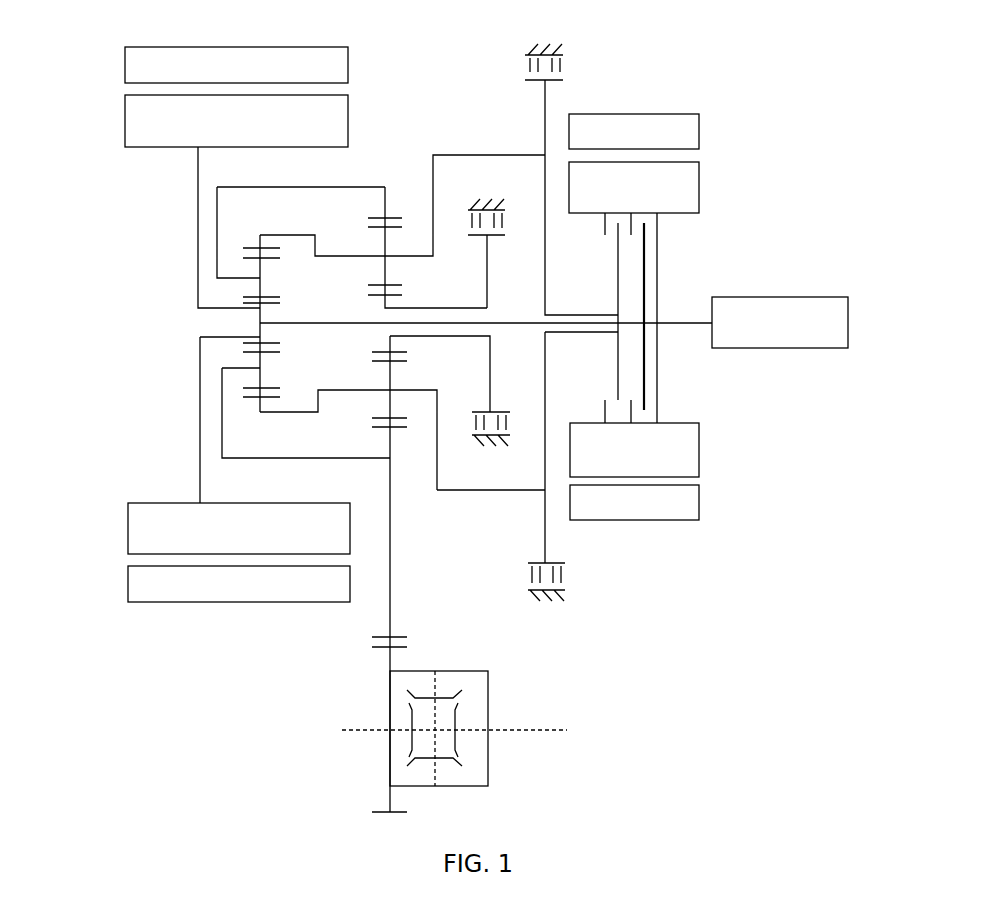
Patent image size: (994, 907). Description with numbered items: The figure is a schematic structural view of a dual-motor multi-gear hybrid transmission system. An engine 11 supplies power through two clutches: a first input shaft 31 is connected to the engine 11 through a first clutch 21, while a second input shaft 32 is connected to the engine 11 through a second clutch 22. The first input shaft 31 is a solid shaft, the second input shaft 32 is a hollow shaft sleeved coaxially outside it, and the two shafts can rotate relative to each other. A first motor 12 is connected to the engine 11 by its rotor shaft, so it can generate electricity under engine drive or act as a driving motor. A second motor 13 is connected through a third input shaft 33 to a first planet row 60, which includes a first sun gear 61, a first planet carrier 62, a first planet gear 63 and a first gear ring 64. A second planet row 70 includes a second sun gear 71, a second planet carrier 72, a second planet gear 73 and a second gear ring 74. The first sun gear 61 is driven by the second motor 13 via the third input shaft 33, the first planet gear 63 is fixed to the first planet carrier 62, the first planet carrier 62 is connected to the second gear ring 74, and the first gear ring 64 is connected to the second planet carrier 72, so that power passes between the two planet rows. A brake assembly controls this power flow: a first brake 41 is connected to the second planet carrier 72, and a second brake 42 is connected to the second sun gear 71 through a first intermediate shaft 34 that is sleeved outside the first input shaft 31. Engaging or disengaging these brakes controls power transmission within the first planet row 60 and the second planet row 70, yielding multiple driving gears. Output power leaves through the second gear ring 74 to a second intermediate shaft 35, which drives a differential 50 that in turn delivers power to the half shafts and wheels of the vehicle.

The engine 11 is at (833, 310).
The first motor 12 is at (690, 200).
The second motor 13 is at (159, 129).
The first clutch 21 is at (645, 280).
The second clutch 22 is at (622, 258).
The first input shaft 31 is at (623, 323).
The second input shaft 32 is at (575, 333).
The third input shaft 33 is at (197, 303).
The first intermediate shaft 34 is at (447, 337).
The second intermediate shaft 35 is at (390, 580).
The first brake 41 is at (563, 62).
The second brake 42 is at (483, 207).
The differential 50 is at (473, 713).
The first planet row 60 is at (65, 313).
The first sun gear 61 is at (260, 320).
The first planet carrier 62 is at (220, 383).
The first planet gear 63 is at (260, 353).
The first gear ring 64 is at (260, 410).
The second planet row 70 is at (372, 68).
The second sun gear 71 is at (408, 290).
The second planet carrier 72 is at (345, 255).
The second planet gear 73 is at (373, 287).
The second gear ring 74 is at (318, 187).